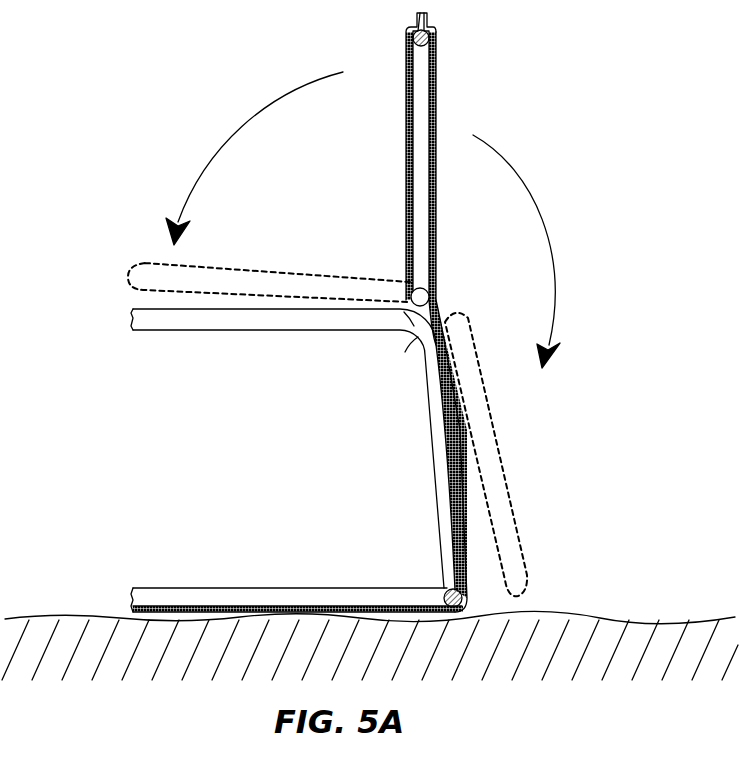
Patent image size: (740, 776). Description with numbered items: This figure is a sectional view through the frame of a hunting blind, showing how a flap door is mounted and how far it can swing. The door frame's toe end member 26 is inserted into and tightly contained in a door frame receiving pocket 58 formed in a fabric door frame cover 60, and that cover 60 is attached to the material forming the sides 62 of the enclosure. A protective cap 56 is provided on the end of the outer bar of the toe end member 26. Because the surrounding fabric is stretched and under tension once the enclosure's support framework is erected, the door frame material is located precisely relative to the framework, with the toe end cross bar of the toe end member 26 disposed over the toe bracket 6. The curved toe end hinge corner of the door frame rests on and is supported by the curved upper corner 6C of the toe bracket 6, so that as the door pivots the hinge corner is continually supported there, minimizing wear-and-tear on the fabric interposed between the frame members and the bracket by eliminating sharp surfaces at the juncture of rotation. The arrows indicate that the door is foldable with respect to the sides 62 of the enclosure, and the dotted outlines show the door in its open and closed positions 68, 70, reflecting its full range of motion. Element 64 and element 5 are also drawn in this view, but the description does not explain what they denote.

The toe end member 26 is at (427, 46).
The door frame receiving pocket 58 is at (410, 127).
The door frame cover 60 is at (436, 85).
The protective cap 56 is at (427, 285).
The closed position 70 is at (218, 264).
The toe bracket 6 is at (212, 332).
The bend connection 64 is at (407, 325).
The curved upper corner 6C is at (405, 350).
The base member 5 is at (290, 587).
The sides 62 is at (466, 565).
The open position 68 is at (523, 533).